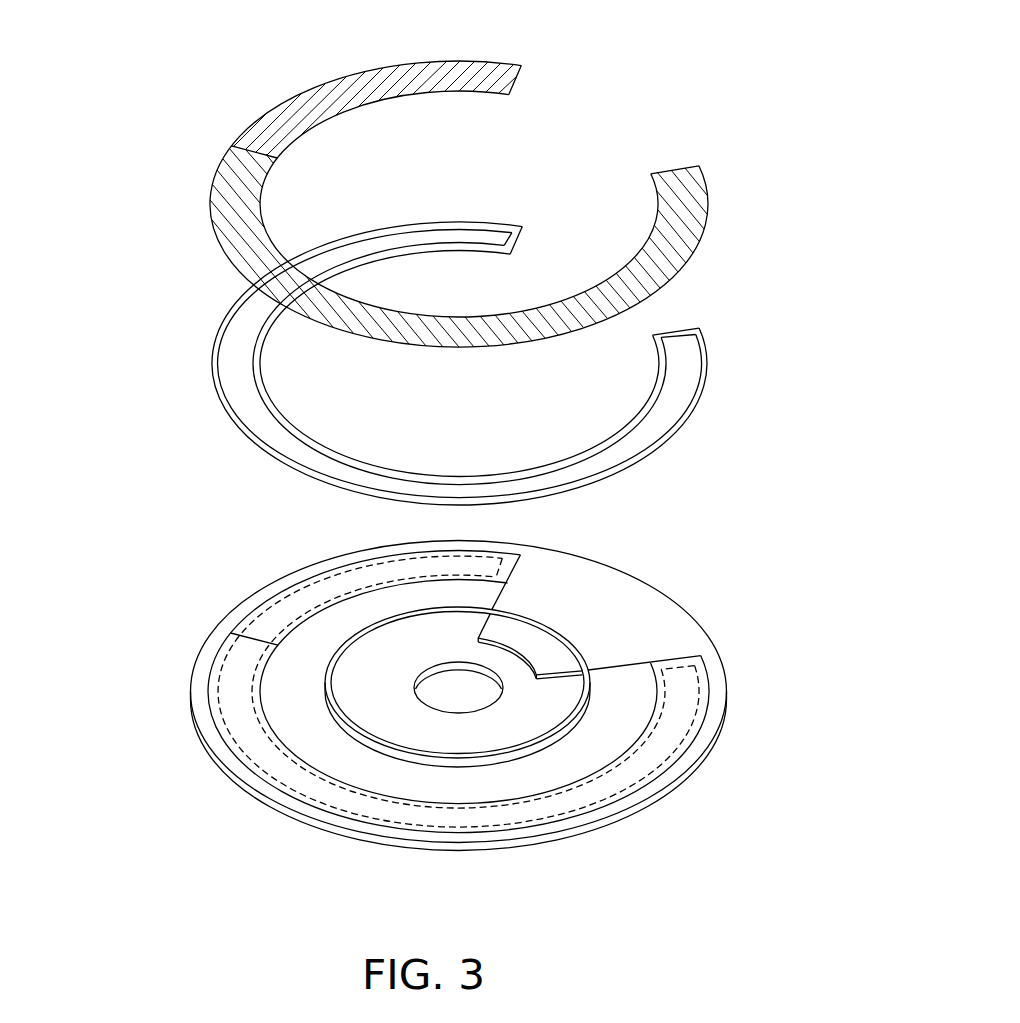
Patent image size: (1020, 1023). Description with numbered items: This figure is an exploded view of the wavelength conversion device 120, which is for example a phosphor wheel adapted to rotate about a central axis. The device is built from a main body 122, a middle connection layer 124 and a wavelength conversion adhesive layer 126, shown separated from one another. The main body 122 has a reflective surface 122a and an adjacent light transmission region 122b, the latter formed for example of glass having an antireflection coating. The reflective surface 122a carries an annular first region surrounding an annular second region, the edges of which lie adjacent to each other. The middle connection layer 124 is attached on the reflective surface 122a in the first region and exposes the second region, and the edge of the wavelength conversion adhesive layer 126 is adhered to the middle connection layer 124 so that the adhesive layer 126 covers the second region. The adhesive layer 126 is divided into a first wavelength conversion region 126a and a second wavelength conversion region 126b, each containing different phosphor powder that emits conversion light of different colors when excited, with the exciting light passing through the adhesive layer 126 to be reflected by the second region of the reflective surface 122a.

The wavelength conversion device 120 is at (727, 880).
The main body 122 is at (407, 683).
The reflective surface 122a is at (242, 667).
The light transmission region 122b is at (603, 620).
The middle connection layer 124 is at (215, 365).
The wavelength conversion adhesive layer 126 is at (394, 176).
The first wavelength conversion region 126a is at (393, 75).
The second wavelength conversion region 126b is at (232, 232).